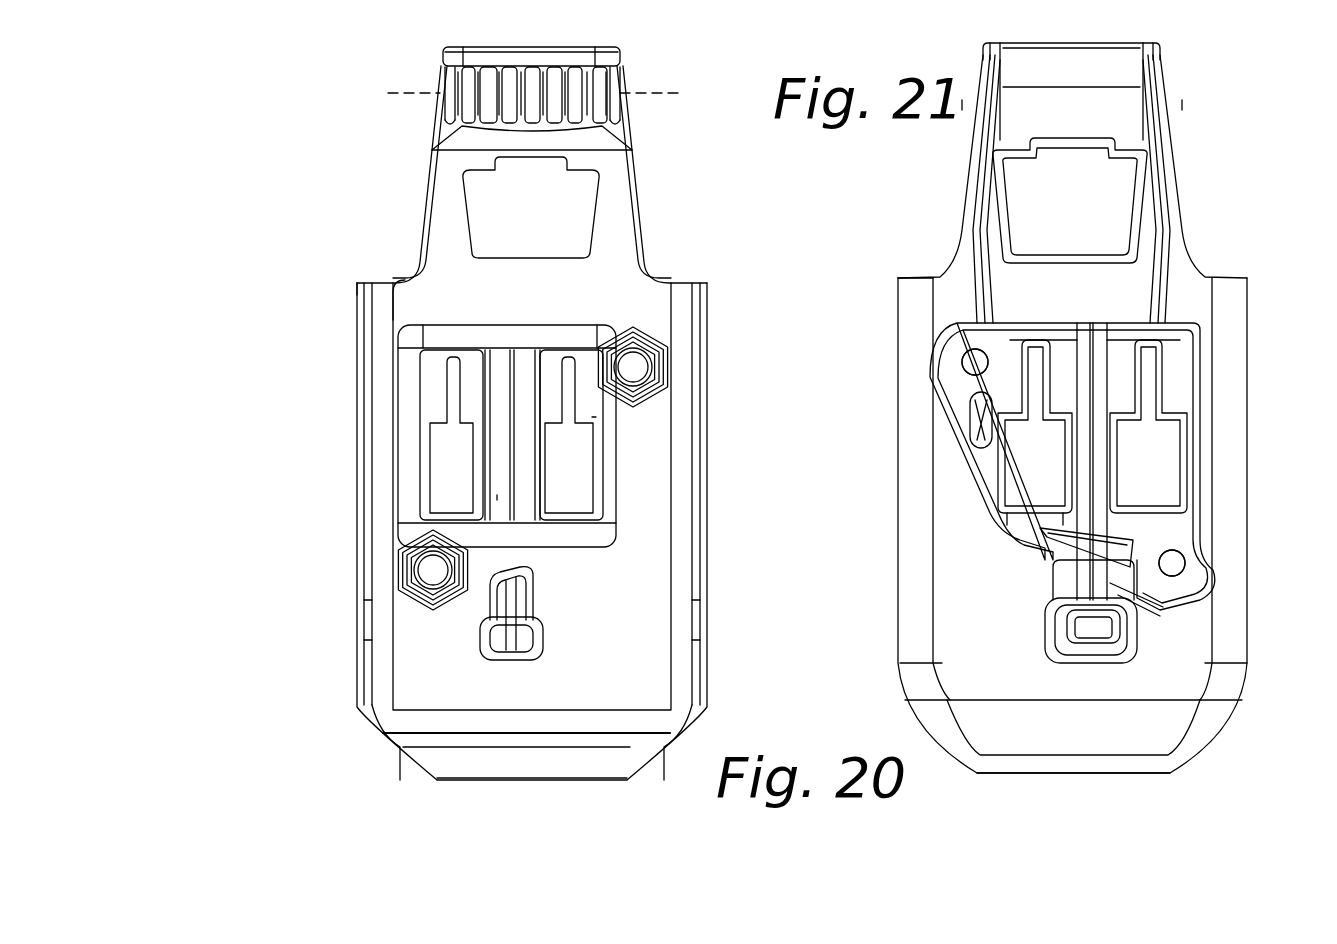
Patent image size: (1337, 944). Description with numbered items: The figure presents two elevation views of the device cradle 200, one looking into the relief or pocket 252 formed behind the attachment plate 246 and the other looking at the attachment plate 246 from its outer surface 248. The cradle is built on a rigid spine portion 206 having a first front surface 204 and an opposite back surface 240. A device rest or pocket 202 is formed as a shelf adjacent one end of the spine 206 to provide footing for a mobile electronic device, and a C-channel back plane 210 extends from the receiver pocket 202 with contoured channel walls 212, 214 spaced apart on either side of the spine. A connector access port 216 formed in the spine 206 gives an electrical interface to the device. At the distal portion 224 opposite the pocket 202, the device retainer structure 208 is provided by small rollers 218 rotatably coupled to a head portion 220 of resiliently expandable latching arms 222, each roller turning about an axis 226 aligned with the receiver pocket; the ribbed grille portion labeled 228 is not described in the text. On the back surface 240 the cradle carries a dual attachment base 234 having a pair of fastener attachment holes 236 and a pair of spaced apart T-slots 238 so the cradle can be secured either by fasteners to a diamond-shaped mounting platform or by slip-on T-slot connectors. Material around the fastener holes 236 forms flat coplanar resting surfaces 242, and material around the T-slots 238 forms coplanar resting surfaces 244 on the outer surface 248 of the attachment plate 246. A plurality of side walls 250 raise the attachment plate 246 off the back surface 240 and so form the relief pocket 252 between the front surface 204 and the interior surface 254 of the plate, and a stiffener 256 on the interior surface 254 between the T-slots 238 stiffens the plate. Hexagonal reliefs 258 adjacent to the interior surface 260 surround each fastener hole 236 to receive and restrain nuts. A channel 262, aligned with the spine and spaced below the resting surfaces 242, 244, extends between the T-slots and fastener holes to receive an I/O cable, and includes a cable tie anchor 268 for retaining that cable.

In FIG. 20, the device cradle 200 is at (362, 192).
In FIG. 21, the device cradle 200 is at (890, 205).
In FIG. 20, the device rest 202 is at (476, 733).
In FIG. 20, the first front surface 204 is at (550, 299).
In FIG. 20, the spine portion 206 is at (412, 277).
In FIG. 21, the spine portion 206 is at (963, 608).
In FIG. 20, the device retainer structure 208 is at (447, 74).
In FIG. 21, the device retainer structure 208 is at (988, 62).
In FIG. 20, the C-channel back plane 210 is at (706, 600).
In FIG. 21, the C-channel back plane 210 is at (1247, 605).
In FIG. 20, the channel wall 212 is at (413, 363).
In FIG. 21, the channel wall 212 is at (1250, 462).
In FIG. 20, the channel wall 214 is at (703, 347).
In FIG. 20, the connector access port 216 is at (572, 252).
In FIG. 21, the connector access port 216 is at (1005, 170).
In FIG. 20, the roller 218 is at (455, 132).
In FIG. 20, the head portion 220 is at (622, 88).
In FIG. 21, the head portion 220 is at (1158, 64).
In FIG. 20, the latching arm 222 is at (433, 128).
In FIG. 20, the distal portion 224 is at (625, 200).
In FIG. 21, the distal portion 224 is at (965, 190).
In FIG. 20, the axis 226 is at (515, 93).
In FIG. 20, the grille fins 228 is at (598, 123).
In FIG. 20, the dual attachment base 234 is at (600, 445).
In FIG. 21, the dual attachment base 234 is at (1030, 512).
In FIG. 21, the fastener attachment hole 236 is at (962, 393).
In FIG. 20, the T-slot 238 is at (427, 352).
In FIG. 21, the T-slot 238 is at (1012, 478).
In FIG. 21, the back surface 240 is at (973, 600).
In FIG. 21, the resting surface 242 is at (963, 340).
In FIG. 21, the resting surface 244 is at (975, 437).
In FIG. 20, the attachment plate 246 is at (437, 403).
In FIG. 21, the attachment plate 246 is at (1178, 397).
In FIG. 21, the outer surface 248 is at (957, 420).
In FIG. 20, the side wall 250 is at (430, 437).
In FIG. 20, the relief or pocket 252 is at (537, 322).
In FIG. 20, the interior surface 254 is at (437, 377).
In FIG. 20, the stiffener 256 is at (497, 495).
In FIG. 20, the relief 258 is at (433, 540).
In FIG. 20, the interior surface 260 is at (633, 367).
In FIG. 21, the channel 262 is at (1182, 342).
In FIG. 20, the cable tie anchor 268 is at (480, 640).
In FIG. 21, the cable tie anchor 268 is at (1100, 627).